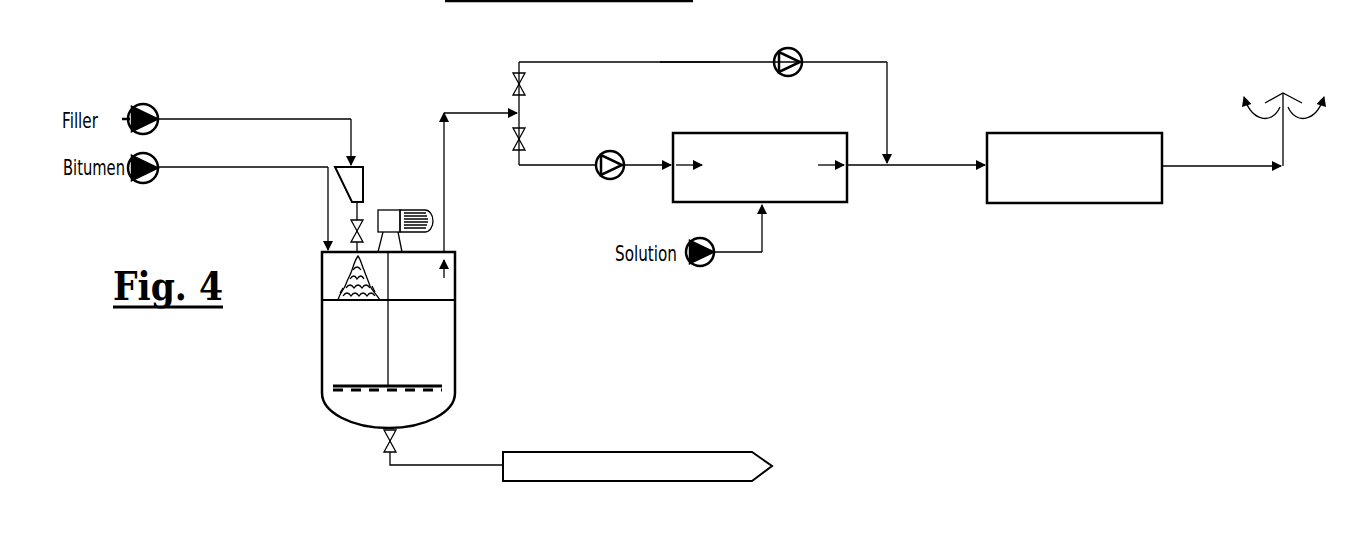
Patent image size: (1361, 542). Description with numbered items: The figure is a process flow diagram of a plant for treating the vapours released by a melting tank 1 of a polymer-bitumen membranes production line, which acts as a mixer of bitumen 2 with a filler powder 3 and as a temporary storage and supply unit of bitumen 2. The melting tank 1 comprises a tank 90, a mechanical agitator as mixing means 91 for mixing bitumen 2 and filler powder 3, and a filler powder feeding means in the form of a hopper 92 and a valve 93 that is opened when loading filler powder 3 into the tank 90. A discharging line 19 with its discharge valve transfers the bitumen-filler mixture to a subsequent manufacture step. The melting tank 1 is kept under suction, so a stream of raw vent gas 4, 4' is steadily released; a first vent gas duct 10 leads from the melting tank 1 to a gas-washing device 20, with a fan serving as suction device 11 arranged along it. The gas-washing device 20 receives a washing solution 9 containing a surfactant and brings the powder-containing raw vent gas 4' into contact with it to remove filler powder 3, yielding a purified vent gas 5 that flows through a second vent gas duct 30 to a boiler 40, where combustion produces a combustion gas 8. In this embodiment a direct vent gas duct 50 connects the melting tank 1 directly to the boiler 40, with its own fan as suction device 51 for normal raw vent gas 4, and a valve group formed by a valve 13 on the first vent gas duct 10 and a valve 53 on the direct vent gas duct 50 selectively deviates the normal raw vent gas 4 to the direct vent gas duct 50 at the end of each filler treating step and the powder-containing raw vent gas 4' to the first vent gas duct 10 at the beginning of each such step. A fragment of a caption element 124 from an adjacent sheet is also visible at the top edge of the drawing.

The melting tank 1 is at (303, 425).
The bitumen 2 is at (262, 167).
The filler powder 3 is at (263, 119).
The normal raw vent gas 4 is at (690, 86).
The powder-containing raw vent gas 4' is at (573, 195).
The purified vent gas 5 is at (830, 168).
The combustion gas 8 is at (1317, 110).
The washing solution 9 is at (743, 252).
The first vent gas duct 10 is at (557, 165).
The suction device 11 is at (602, 180).
The valve 13 is at (513, 140).
The discharging line 19 is at (420, 468).
The gas-washing device 20 is at (659, 132).
The second vent gas duct 30 is at (922, 165).
The boiler 40 is at (977, 139).
The direct vent gas duct 50 is at (593, 62).
The suction device for normal raw vent gas 51 is at (778, 50).
The valve 53 is at (513, 80).
The tank 90 is at (323, 377).
The mixing means 91 is at (427, 392).
The hopper 92 is at (366, 178).
The valve 93 is at (307, 208).
The adjacent figure element 124 is at (757, 4).